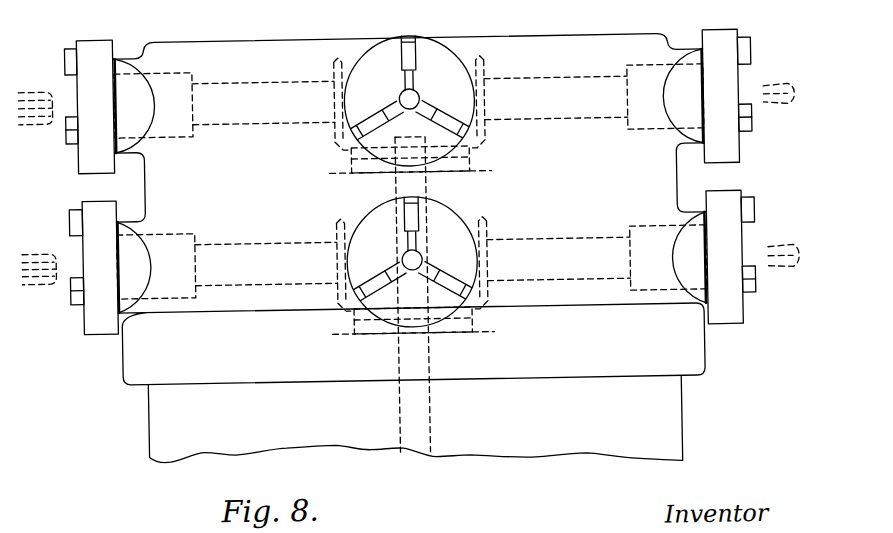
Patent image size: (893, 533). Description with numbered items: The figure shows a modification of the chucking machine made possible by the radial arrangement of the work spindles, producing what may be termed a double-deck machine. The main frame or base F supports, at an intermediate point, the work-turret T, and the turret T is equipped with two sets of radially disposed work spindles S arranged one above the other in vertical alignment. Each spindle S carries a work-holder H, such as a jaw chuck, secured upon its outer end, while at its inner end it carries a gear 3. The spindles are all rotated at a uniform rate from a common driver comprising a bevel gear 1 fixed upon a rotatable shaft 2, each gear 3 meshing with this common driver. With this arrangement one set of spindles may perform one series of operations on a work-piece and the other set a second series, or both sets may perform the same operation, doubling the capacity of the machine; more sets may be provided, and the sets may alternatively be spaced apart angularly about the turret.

The bevel gear 1 is at (435, 131).
The rotatable shaft 2 is at (434, 363).
The gear 3 is at (338, 61).
The work spindle S is at (248, 121).
The work-holder H is at (92, 200).
The work-turret T is at (411, 344).
The main frame F is at (415, 422).